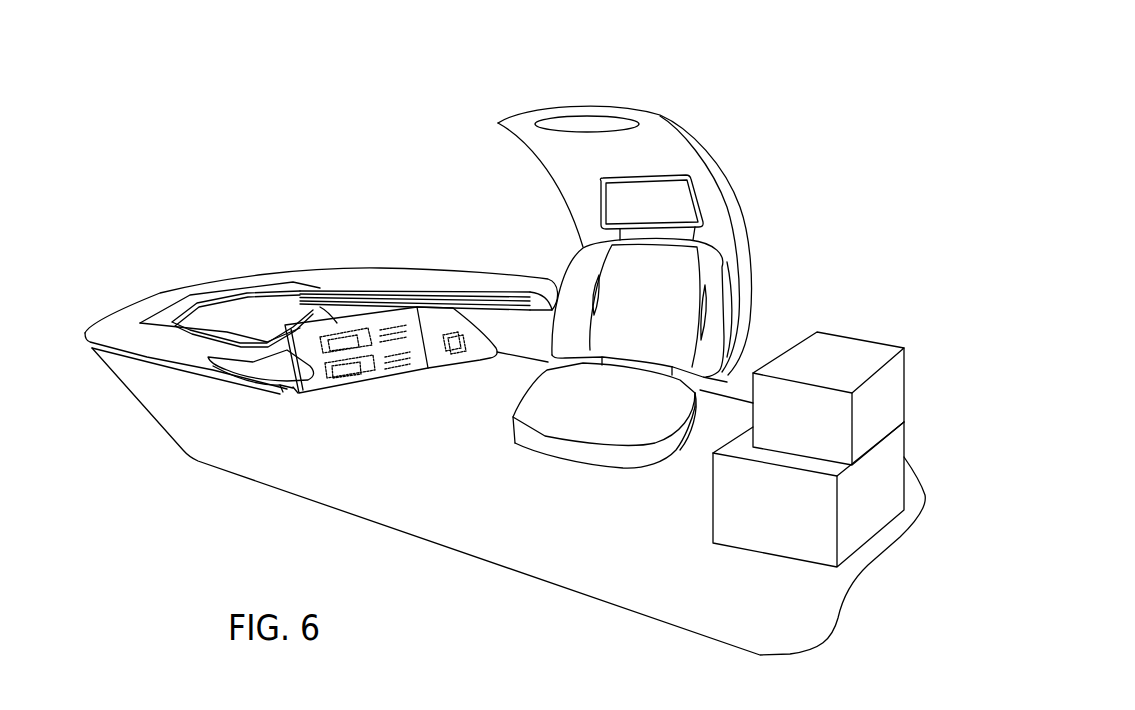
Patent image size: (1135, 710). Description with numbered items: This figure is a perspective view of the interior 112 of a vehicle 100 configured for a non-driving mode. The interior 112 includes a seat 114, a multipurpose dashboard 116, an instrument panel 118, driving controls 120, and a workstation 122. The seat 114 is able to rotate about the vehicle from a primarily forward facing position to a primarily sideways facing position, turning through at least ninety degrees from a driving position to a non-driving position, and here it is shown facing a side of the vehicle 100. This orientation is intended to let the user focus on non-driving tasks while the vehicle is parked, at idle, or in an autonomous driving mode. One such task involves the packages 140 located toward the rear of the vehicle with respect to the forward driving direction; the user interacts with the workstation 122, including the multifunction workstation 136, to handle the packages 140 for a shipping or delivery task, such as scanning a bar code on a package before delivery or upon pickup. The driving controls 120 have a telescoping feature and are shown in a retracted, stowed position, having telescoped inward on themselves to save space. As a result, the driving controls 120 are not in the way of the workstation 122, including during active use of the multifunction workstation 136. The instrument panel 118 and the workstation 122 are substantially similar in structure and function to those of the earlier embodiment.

The vehicle 100 is at (765, 92).
The interior 112 is at (177, 228).
The seat 114 is at (563, 422).
The multipurpose dashboard 116 is at (137, 280).
The instrument panel 118 is at (446, 284).
The driving controls 120 is at (300, 315).
The workstation 122 is at (103, 403).
The multifunction workstation 136 is at (390, 365).
The packages 140 is at (853, 345).